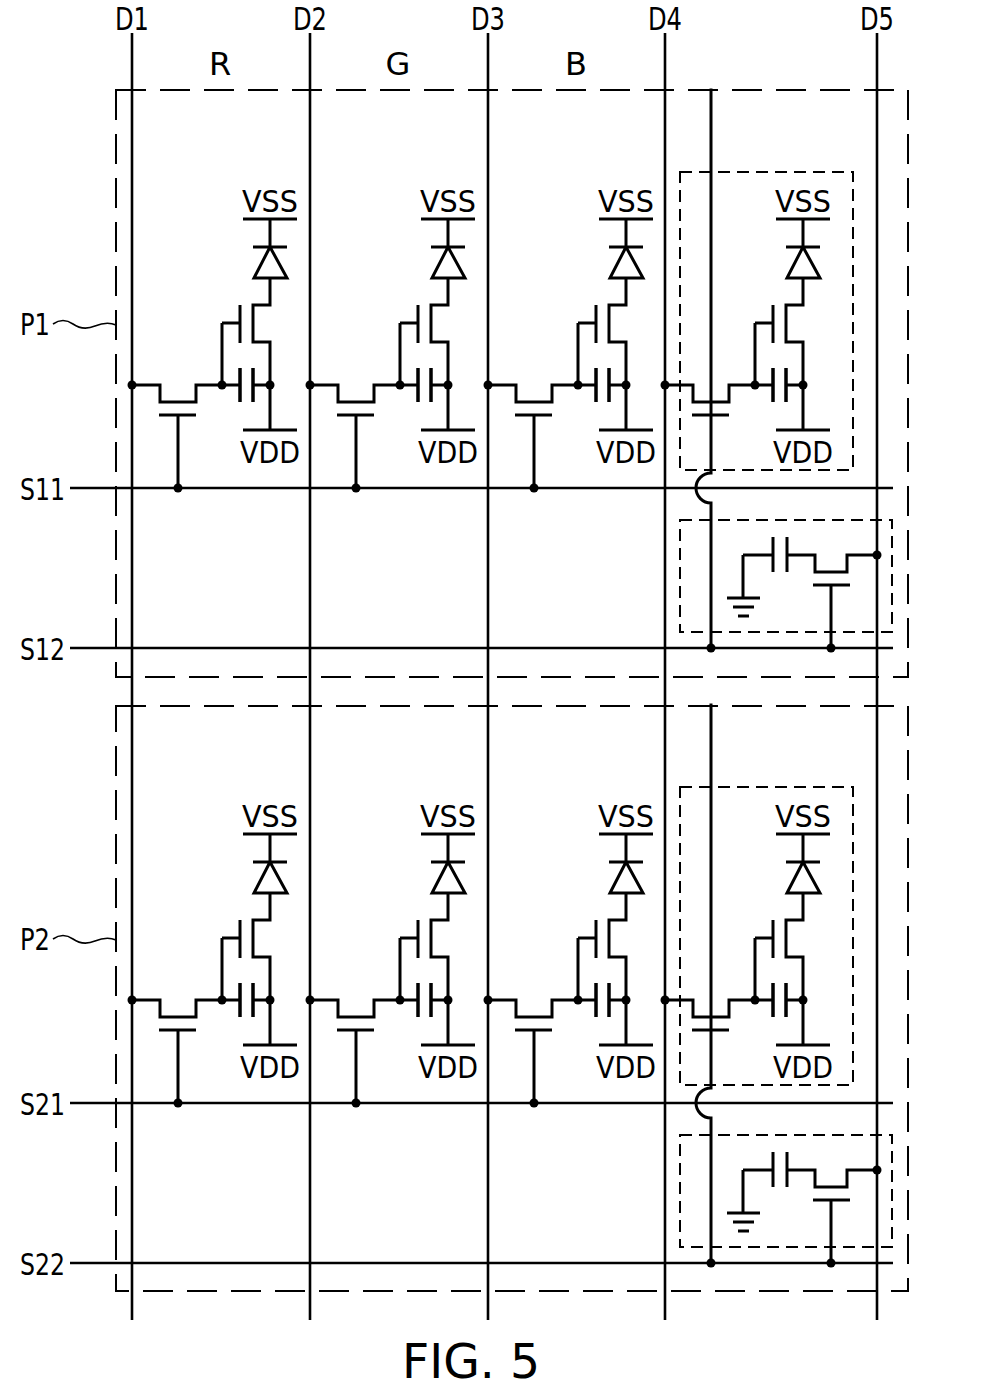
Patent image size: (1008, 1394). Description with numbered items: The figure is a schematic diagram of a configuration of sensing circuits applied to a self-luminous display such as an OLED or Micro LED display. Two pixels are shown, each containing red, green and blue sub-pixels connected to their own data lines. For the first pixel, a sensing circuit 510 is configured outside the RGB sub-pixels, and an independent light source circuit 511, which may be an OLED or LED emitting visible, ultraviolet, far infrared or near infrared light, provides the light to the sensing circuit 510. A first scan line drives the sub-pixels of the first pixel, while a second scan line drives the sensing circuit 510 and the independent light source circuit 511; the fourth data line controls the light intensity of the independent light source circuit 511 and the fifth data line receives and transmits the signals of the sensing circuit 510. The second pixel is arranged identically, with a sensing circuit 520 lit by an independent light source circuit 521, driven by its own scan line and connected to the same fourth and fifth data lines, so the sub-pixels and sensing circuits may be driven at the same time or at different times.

The independent light source circuit 511 is at (764, 170).
The sensing circuit 510 is at (680, 607).
The independent light source circuit 521 is at (764, 785).
The sensing circuit 520 is at (680, 1222).